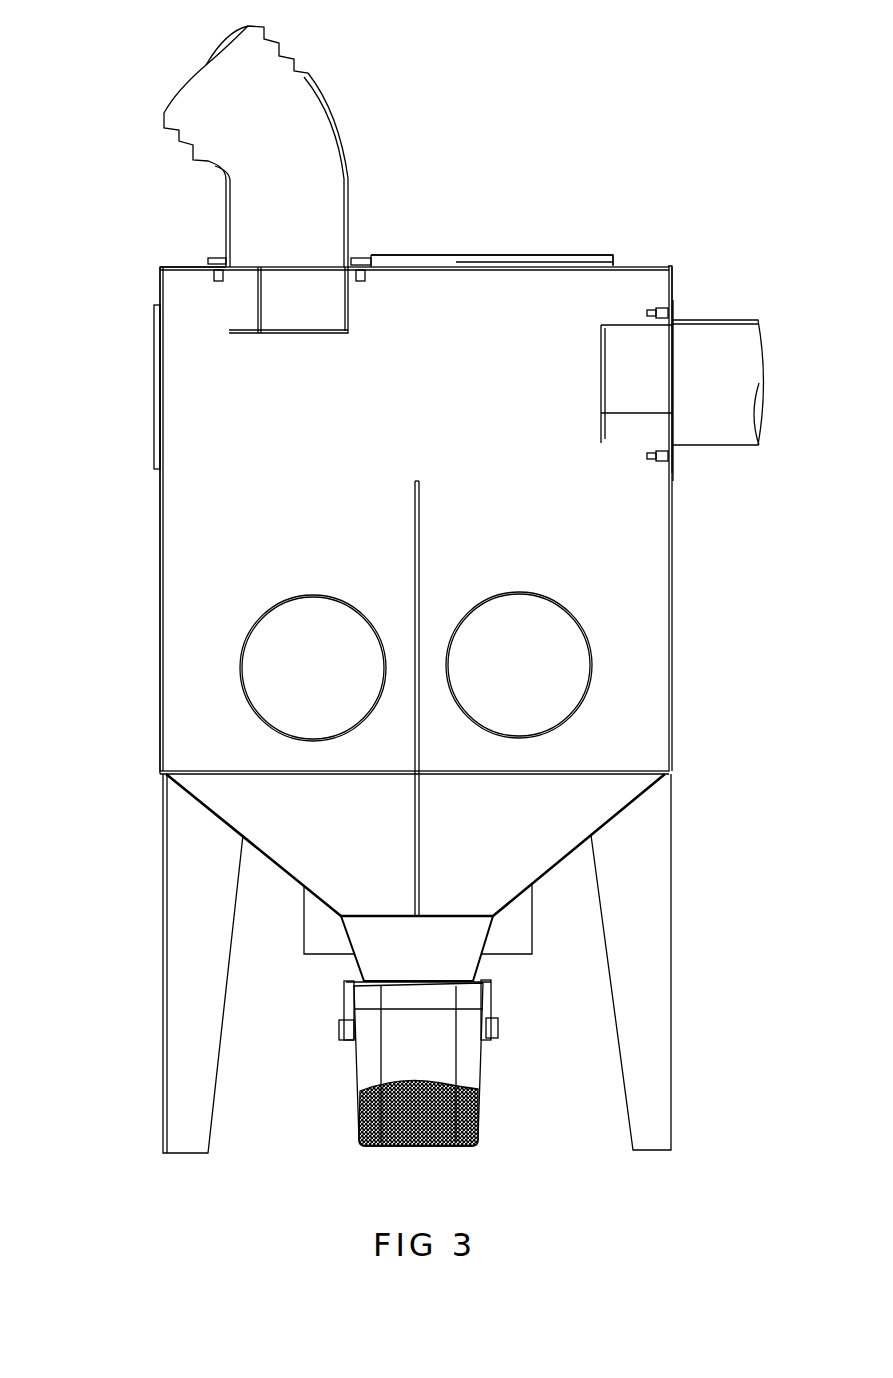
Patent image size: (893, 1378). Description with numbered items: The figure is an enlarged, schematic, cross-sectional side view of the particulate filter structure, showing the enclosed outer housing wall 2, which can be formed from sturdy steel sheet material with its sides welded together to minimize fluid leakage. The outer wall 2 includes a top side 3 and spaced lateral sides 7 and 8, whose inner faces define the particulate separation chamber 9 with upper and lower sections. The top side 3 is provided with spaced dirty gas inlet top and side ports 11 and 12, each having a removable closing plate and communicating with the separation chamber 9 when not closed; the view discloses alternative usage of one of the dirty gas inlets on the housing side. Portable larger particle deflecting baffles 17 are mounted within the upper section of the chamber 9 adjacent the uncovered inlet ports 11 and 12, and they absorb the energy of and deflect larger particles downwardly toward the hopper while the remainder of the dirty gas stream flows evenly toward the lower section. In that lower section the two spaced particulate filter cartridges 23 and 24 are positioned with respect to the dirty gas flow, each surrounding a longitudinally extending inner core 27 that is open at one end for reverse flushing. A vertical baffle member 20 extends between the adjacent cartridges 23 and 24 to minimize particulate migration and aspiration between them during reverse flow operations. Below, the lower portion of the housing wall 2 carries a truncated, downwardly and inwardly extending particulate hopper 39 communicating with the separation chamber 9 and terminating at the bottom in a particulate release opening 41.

The outer housing wall 2 is at (96, 387).
The top side 3 is at (188, 263).
The lateral side 7 is at (672, 605).
The lateral side 8 is at (157, 637).
The particulate separation chamber 9 is at (460, 439).
The dirty gas inlet top port 11 is at (555, 258).
The dirty gas inlet side port 12 is at (300, 278).
The larger particle deflecting baffle 17 is at (262, 337).
The vertical baffle member 20 is at (418, 528).
The filter cartridge 23 is at (320, 592).
The filter cartridge 24 is at (507, 589).
The inner core 27 is at (325, 687).
The particulate hopper 39 is at (480, 819).
The particulate release opening 41 is at (456, 1054).